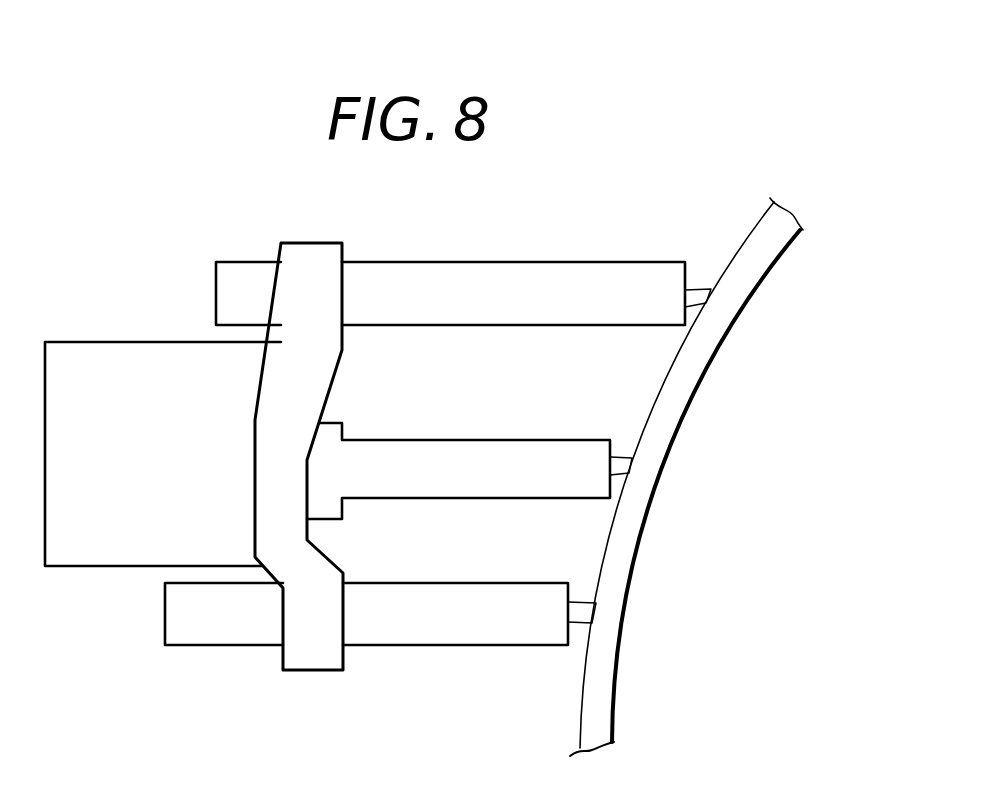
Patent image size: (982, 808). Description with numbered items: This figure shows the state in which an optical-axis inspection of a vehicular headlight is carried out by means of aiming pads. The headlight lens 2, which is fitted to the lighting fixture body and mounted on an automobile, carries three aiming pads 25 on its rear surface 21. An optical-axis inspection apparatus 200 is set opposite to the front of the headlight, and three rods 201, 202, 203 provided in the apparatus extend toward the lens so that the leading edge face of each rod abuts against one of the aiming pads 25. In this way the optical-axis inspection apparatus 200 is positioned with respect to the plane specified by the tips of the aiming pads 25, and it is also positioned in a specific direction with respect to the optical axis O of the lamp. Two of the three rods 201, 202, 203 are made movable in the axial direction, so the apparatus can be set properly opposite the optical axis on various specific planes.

The lens 2 is at (706, 477).
The rail surface 21 is at (620, 563).
The aiming pad 25 is at (698, 298).
The optical-axis inspection apparatus 200 is at (88, 548).
The rod 201 is at (447, 277).
The rod 202 is at (425, 438).
The rod 203 is at (465, 628).
The optical axis O is at (435, 463).